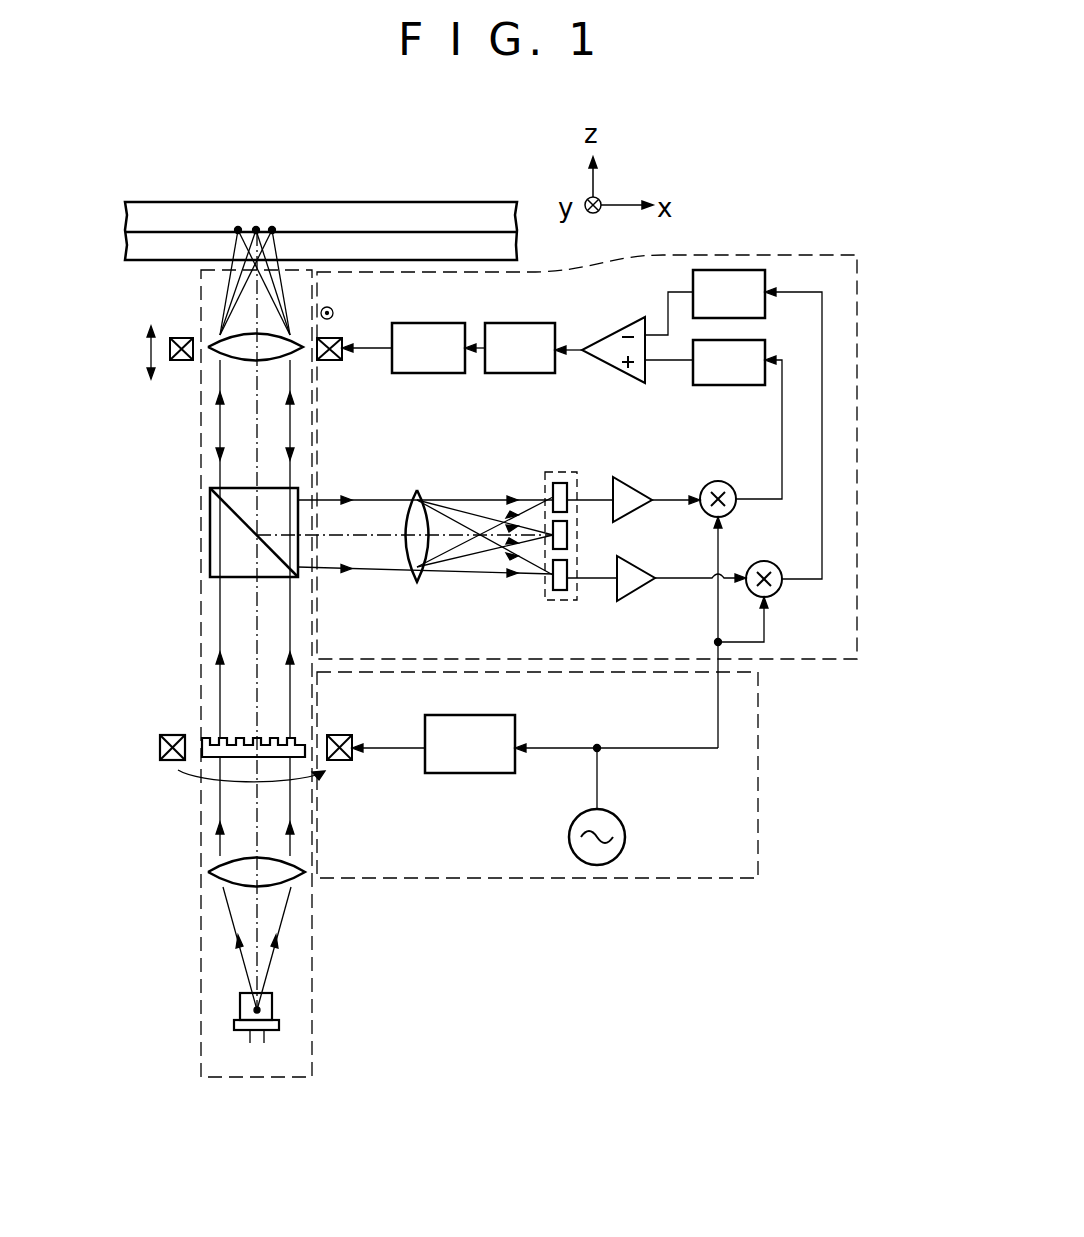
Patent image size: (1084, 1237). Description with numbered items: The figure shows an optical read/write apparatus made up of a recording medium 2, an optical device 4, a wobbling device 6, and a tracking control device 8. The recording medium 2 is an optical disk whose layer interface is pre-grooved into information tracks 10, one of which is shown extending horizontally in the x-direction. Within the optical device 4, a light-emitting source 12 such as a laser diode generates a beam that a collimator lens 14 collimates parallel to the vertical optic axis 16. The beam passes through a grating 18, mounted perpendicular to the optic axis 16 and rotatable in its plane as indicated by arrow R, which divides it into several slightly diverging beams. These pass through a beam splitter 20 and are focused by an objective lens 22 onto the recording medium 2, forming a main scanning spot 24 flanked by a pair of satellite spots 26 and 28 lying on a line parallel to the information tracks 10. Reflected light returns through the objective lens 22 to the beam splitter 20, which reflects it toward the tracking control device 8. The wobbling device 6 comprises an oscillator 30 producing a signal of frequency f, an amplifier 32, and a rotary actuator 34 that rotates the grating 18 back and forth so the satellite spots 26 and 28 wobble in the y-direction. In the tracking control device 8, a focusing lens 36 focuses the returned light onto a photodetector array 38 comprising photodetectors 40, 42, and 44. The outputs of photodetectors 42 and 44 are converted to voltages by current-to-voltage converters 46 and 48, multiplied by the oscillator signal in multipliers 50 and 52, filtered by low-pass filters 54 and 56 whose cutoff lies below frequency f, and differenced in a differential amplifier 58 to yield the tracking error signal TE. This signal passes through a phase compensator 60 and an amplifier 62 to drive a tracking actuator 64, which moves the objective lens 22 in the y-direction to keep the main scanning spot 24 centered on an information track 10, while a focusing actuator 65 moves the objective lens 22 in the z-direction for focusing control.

The recording medium 2 is at (498, 218).
The optical device 4 is at (200, 958).
The wobbling device 6 is at (760, 840).
The tracking control device 8 is at (858, 490).
The information track 10 is at (392, 230).
The light-emitting source 12 is at (270, 1003).
The collimator lens 14 is at (297, 873).
The optic axis 16 is at (257, 634).
The grating 18 is at (205, 738).
The beam splitter 20 is at (210, 540).
The objective lens 22 is at (215, 337).
The main scanning spot 24 is at (256, 230).
The satellite spot 26 is at (238, 230).
The satellite spot 28 is at (272, 230).
The oscillator 30 is at (625, 833).
The amplifier 32 is at (480, 770).
The rotary actuator 34 is at (338, 733).
The focusing lens 36 is at (417, 494).
The photodetector array 38 is at (548, 471).
The photodetector 40 is at (567, 537).
The photodetector 42 is at (567, 490).
The photodetector 44 is at (553, 585).
The current-to-voltage converter 46 is at (632, 490).
The current-to-voltage converter 48 is at (640, 588).
The multiplier 50 is at (745, 468).
The multiplier 52 is at (775, 564).
The low-pass filter 54 is at (722, 385).
The low-pass filter 56 is at (735, 276).
The differential amplifier 58 is at (610, 338).
The phase compensator 60 is at (527, 338).
The amplifier 62 is at (423, 336).
The tracking actuator 64 is at (333, 362).
The focusing actuator 65 is at (177, 362).